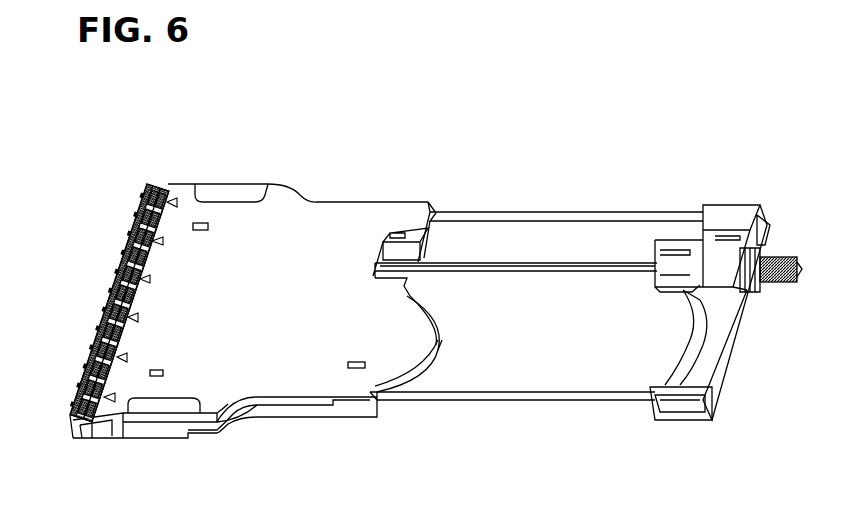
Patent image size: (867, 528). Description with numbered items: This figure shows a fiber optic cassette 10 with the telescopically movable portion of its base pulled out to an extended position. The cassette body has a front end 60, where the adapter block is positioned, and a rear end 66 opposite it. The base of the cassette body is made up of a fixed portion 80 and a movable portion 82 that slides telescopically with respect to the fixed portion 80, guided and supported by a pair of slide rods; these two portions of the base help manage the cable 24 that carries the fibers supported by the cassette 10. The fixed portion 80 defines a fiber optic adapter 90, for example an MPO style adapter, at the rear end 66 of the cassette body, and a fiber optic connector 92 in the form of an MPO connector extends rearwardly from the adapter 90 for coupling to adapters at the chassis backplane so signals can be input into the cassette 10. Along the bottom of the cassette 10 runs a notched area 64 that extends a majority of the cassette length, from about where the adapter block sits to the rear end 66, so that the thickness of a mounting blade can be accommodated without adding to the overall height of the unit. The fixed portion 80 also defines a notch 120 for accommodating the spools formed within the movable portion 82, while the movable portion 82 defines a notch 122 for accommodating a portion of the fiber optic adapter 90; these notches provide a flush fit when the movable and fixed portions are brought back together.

The cassette 10 is at (386, 311).
The cable 24 is at (573, 272).
The front end 60 is at (97, 285).
The notched area 64 is at (228, 432).
The rear end 66 is at (748, 325).
The fixed portion 80 is at (695, 382).
The movable portion 82 is at (413, 335).
The fiber optic adapter 90 is at (718, 250).
The fiber optic connector 92 is at (772, 263).
The notch 120 is at (683, 358).
The notch 122 is at (412, 257).